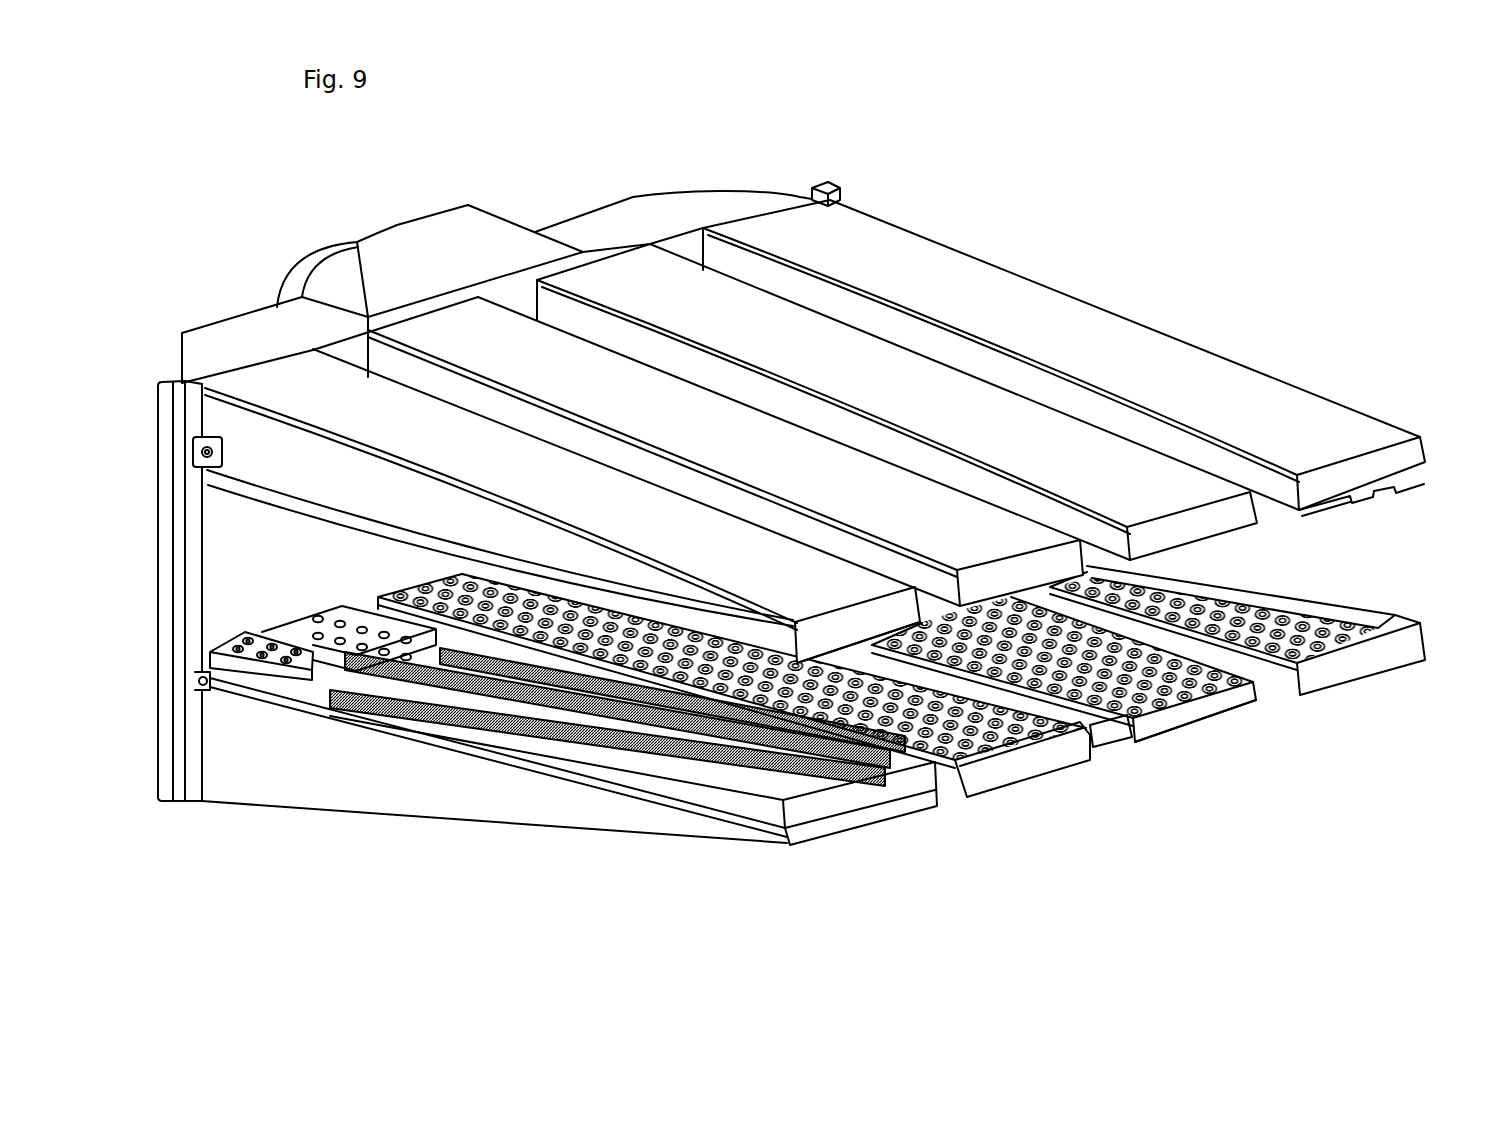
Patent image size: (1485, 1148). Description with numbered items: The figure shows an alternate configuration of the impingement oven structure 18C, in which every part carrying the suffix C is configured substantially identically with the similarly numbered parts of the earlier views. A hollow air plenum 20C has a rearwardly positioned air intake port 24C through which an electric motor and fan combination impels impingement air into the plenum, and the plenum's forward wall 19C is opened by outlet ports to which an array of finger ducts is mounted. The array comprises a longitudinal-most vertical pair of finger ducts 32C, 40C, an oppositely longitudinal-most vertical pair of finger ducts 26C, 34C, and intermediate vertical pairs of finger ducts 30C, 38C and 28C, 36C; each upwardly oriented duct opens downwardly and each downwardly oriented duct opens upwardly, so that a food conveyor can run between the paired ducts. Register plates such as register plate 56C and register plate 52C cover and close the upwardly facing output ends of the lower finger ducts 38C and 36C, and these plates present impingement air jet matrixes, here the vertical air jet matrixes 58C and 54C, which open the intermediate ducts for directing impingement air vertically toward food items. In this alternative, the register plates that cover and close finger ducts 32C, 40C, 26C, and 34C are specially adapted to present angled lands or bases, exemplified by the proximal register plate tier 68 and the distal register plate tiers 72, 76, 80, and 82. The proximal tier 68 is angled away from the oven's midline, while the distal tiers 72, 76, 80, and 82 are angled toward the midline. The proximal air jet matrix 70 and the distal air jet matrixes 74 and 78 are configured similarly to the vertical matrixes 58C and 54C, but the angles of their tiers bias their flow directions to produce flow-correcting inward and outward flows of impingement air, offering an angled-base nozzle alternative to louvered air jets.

The impingement oven structure 18C is at (932, 222).
The forward wall 19C is at (242, 528).
The air plenum 20C is at (568, 225).
The air intake port 24C is at (314, 272).
The upper finger duct 26C is at (868, 245).
The upper intermediate finger duct 28C is at (713, 325).
The upper intermediate finger duct 30C is at (597, 380).
The upper finger duct 32C is at (303, 388).
The lower finger duct 34C is at (1380, 672).
The lower intermediate finger duct 36C is at (1148, 738).
The lower intermediate finger duct 38C is at (987, 780).
The lower finger duct 40C is at (848, 817).
The register plate 52C is at (1213, 690).
The vertical air jet matrix 54C is at (1162, 713).
The register plate 56C is at (1070, 737).
The vertical air jet matrix 58C is at (1018, 747).
The proximal register plate tier 68 is at (262, 643).
The proximal air jet matrix 70 is at (292, 656).
The distal register plate tier 72 is at (734, 788).
The distal air jet matrix 74 is at (617, 744).
The distal register plate tier 76 is at (1253, 582).
The distal air jet matrix 78 is at (1370, 612).
The distal register plate tier 80 is at (1360, 497).
The distal register plate tier 82 is at (840, 652).